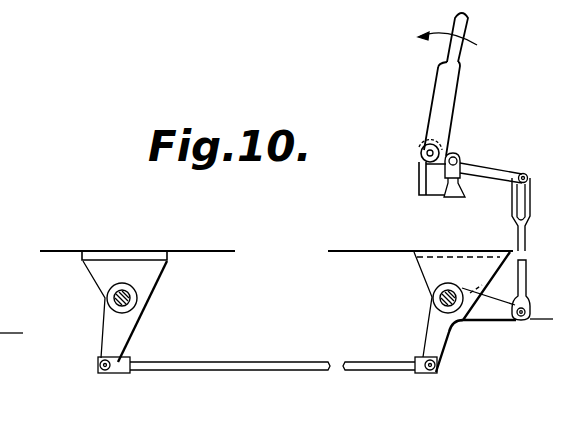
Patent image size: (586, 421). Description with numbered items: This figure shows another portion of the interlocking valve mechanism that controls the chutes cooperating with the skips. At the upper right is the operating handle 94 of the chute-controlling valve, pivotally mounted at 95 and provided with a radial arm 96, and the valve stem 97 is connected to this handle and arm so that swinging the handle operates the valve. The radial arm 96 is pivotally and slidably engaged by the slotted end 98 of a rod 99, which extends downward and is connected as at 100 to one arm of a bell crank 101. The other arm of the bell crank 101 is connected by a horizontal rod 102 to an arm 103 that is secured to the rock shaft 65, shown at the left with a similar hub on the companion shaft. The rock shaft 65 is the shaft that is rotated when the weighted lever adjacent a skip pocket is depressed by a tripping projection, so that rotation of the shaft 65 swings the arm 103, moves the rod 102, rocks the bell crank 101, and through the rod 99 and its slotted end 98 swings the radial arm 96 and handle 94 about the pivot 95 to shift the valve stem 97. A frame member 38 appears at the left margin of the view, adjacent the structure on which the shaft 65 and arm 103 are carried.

The frame member 38 is at (11, 297).
The rock shaft 65 is at (130, 298).
The operating handle 94 is at (445, 103).
The pivot 95 is at (421, 151).
The radial arm 96 is at (470, 157).
The valve stem 97 is at (448, 184).
The slotted end 98 is at (530, 210).
The rod 99 is at (528, 272).
The connection 100 is at (558, 328).
The bell crank 101 is at (483, 308).
The rod 102 is at (296, 358).
The arm 103 is at (119, 336).